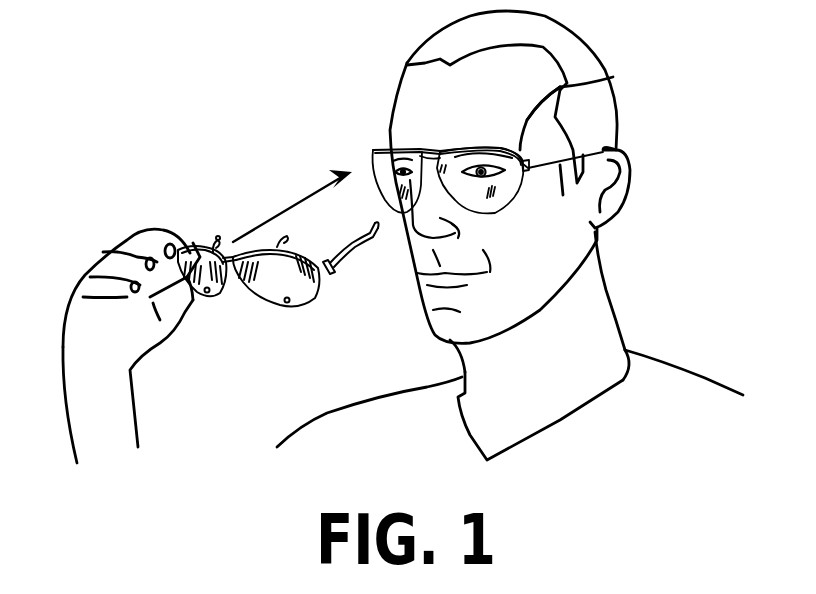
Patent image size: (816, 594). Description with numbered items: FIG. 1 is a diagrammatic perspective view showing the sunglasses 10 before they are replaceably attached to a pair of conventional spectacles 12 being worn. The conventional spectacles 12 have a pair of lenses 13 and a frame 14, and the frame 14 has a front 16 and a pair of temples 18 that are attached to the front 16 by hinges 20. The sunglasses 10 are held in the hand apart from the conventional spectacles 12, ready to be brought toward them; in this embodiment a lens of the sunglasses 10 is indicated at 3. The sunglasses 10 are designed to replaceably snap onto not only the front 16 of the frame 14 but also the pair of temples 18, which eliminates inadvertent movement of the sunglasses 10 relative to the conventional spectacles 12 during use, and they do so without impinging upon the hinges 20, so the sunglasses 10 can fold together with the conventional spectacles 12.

The sunglasses 10 is at (270, 276).
The lens 3 is at (212, 320).
The conventional spectacles 12 is at (450, 143).
The pair of lenses 13 is at (487, 208).
The frame 14 is at (428, 126).
The front 16 is at (478, 147).
The pair of temples 18 is at (562, 195).
The hinges 20 is at (613, 77).